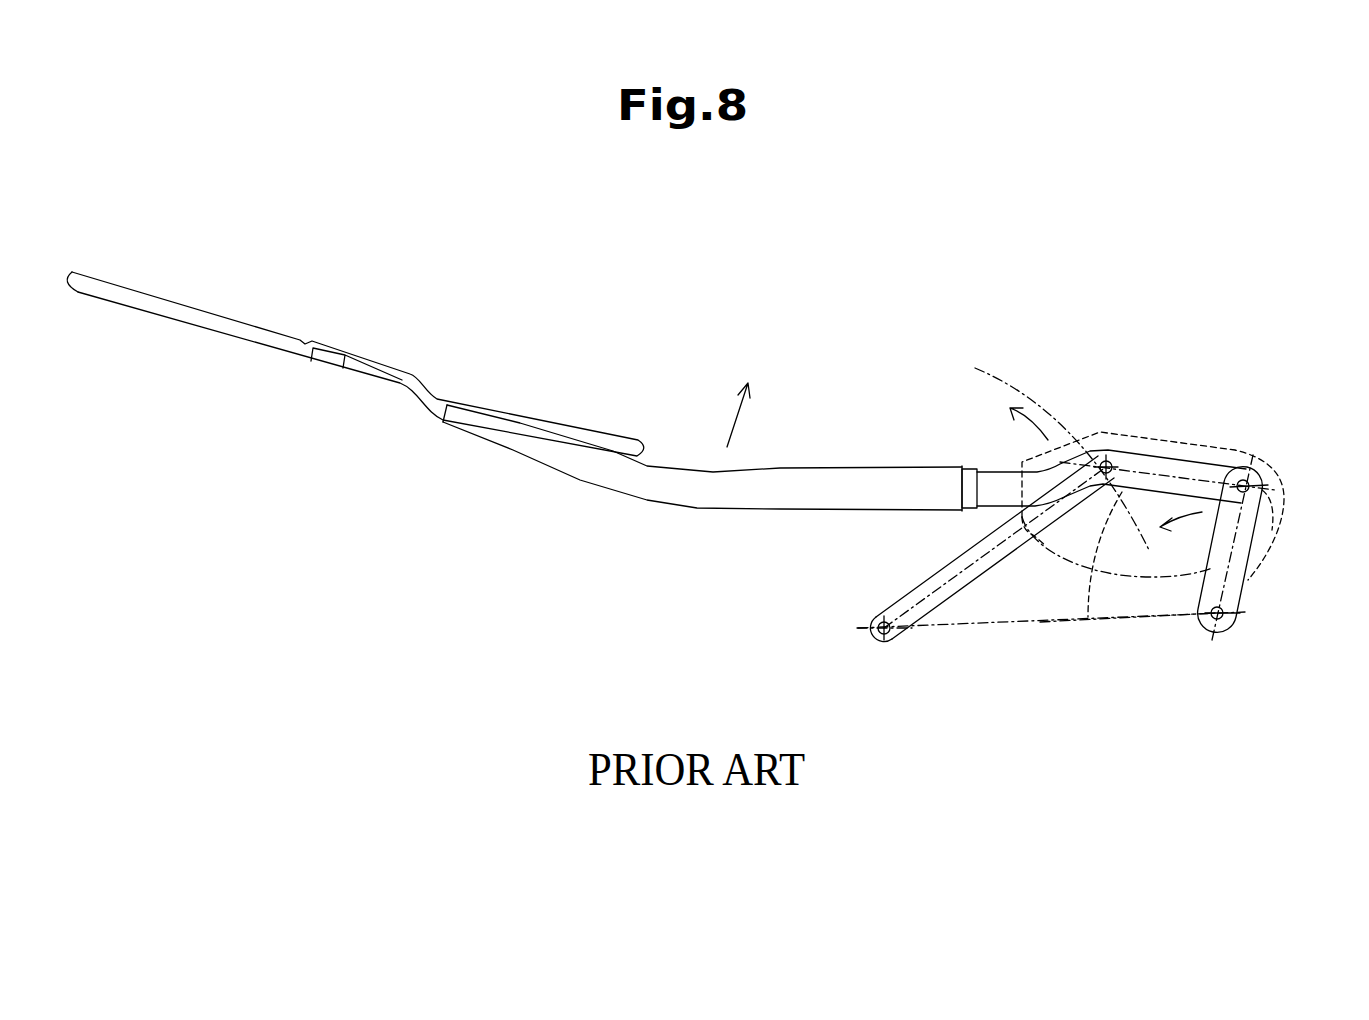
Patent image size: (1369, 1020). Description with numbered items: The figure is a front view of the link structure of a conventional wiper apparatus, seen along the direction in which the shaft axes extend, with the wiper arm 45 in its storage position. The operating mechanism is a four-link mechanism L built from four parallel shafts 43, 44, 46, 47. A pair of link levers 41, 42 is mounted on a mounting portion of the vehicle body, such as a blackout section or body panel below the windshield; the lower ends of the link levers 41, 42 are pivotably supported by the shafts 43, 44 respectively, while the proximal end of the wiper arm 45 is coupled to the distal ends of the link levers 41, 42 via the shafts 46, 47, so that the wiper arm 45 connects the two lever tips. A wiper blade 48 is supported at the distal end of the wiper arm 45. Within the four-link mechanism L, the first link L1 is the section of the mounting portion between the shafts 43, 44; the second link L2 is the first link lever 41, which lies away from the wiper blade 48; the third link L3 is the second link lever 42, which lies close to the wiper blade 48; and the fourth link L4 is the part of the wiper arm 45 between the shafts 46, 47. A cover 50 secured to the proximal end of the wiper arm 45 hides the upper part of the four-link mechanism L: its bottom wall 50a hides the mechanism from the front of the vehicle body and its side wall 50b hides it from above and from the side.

The wiper blade 48 is at (230, 317).
The wiper arm 45 is at (995, 478).
The shaft 47 is at (1107, 460).
The cover 50 is at (1222, 447).
The bottom wall 50a is at (1118, 570).
The side wall 50b is at (1286, 502).
The shaft 46 is at (1257, 473).
The first link lever 41 is at (1233, 587).
The second link lever 42 is at (987, 565).
The shaft 43 is at (1223, 625).
The shaft 44 is at (877, 643).
The four-link mechanism L is at (1077, 632).
The first link L1 is at (1163, 619).
The second link L2 is at (1245, 522).
The third link L3 is at (943, 587).
The fourth link L4 is at (1167, 468).